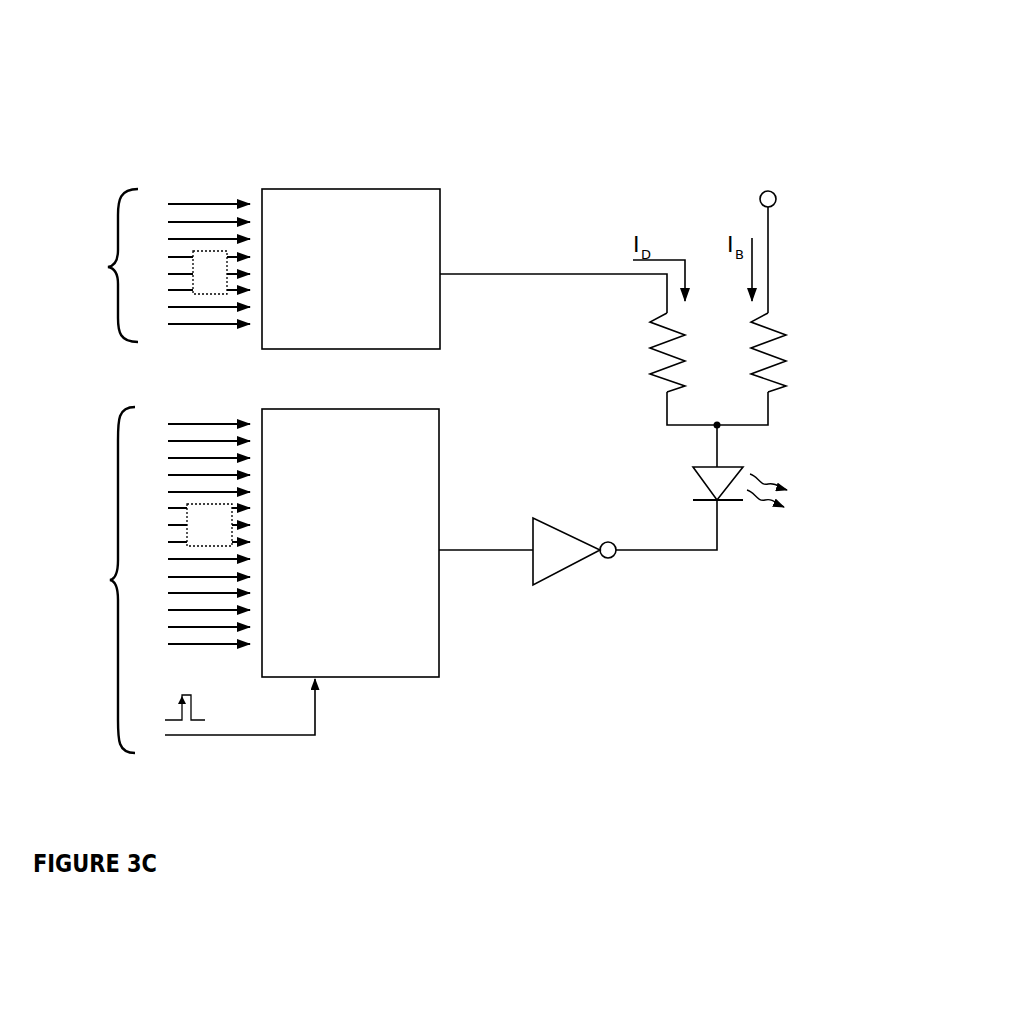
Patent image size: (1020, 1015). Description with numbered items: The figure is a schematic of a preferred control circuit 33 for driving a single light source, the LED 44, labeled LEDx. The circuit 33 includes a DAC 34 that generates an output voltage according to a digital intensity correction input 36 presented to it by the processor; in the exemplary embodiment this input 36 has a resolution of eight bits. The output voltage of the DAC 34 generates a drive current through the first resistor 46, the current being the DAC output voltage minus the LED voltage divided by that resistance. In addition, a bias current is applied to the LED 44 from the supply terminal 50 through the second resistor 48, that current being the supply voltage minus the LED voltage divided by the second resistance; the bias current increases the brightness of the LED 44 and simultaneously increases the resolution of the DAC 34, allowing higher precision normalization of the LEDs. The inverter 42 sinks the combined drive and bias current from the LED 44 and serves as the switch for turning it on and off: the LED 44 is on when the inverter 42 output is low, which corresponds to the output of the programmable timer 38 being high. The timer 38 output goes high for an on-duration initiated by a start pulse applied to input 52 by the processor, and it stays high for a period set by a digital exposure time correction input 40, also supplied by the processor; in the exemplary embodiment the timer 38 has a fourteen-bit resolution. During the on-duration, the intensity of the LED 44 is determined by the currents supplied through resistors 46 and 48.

The control circuit 33 is at (611, 152).
The DAC 34 is at (407, 193).
The digital intensity correction input 36 is at (149, 265).
The programmable timer 38 is at (373, 411).
The digital exposure time correction input 40 is at (151, 580).
The inverter 42 is at (545, 578).
The LED 44 is at (730, 510).
The resistor 46 is at (651, 332).
The resistor 48 is at (784, 316).
The supply terminal V+ 50 is at (784, 205).
The input 52 is at (218, 748).